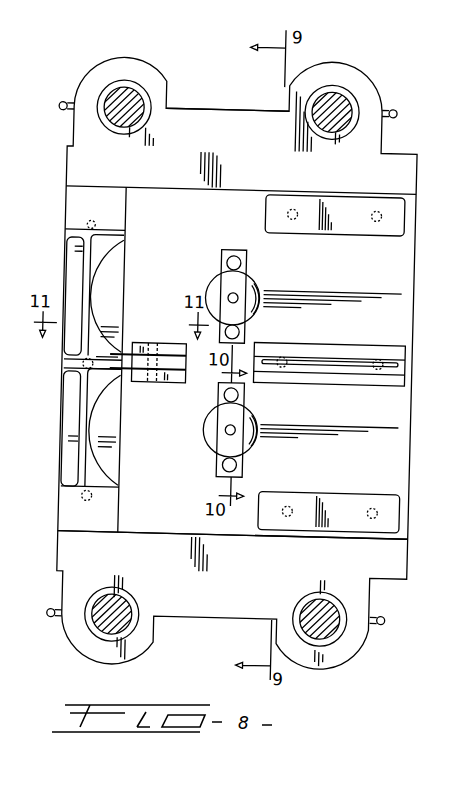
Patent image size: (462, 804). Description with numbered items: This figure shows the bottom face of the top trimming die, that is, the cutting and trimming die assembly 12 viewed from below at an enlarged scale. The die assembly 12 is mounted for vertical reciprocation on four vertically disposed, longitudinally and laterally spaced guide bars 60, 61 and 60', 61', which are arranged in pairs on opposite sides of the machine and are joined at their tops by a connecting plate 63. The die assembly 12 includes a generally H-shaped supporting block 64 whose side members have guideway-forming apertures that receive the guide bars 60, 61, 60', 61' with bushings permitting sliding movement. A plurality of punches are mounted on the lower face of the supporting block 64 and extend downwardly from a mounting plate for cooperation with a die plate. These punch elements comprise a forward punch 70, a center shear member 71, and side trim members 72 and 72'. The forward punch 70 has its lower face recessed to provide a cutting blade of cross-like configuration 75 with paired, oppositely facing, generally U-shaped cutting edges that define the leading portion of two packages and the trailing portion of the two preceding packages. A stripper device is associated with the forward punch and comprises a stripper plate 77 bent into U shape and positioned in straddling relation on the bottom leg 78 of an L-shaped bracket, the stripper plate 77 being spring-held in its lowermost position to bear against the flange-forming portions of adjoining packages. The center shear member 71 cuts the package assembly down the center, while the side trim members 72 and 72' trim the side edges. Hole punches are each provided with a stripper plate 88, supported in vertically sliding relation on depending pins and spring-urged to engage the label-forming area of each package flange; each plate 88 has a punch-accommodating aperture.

The cutting and trimming die assembly 12 is at (417, 238).
The guide bar 60 is at (357, 102).
The guide bar 60' is at (339, 629).
The guide bar 61 is at (134, 99).
The guide bar 61' is at (110, 630).
The connecting plate 63 is at (209, 118).
The supporting block 64 is at (395, 556).
The forward punch 70 is at (61, 398).
The center shear member 71 is at (320, 373).
The side trim member 72 is at (329, 498).
The side trim member 72' is at (334, 232).
The cutting blade of cross-like configuration 75 is at (82, 432).
The stripper plate 77 is at (152, 359).
The bottom leg of L-shaped bracket 78 is at (168, 364).
The stripper plate 88 is at (237, 442).